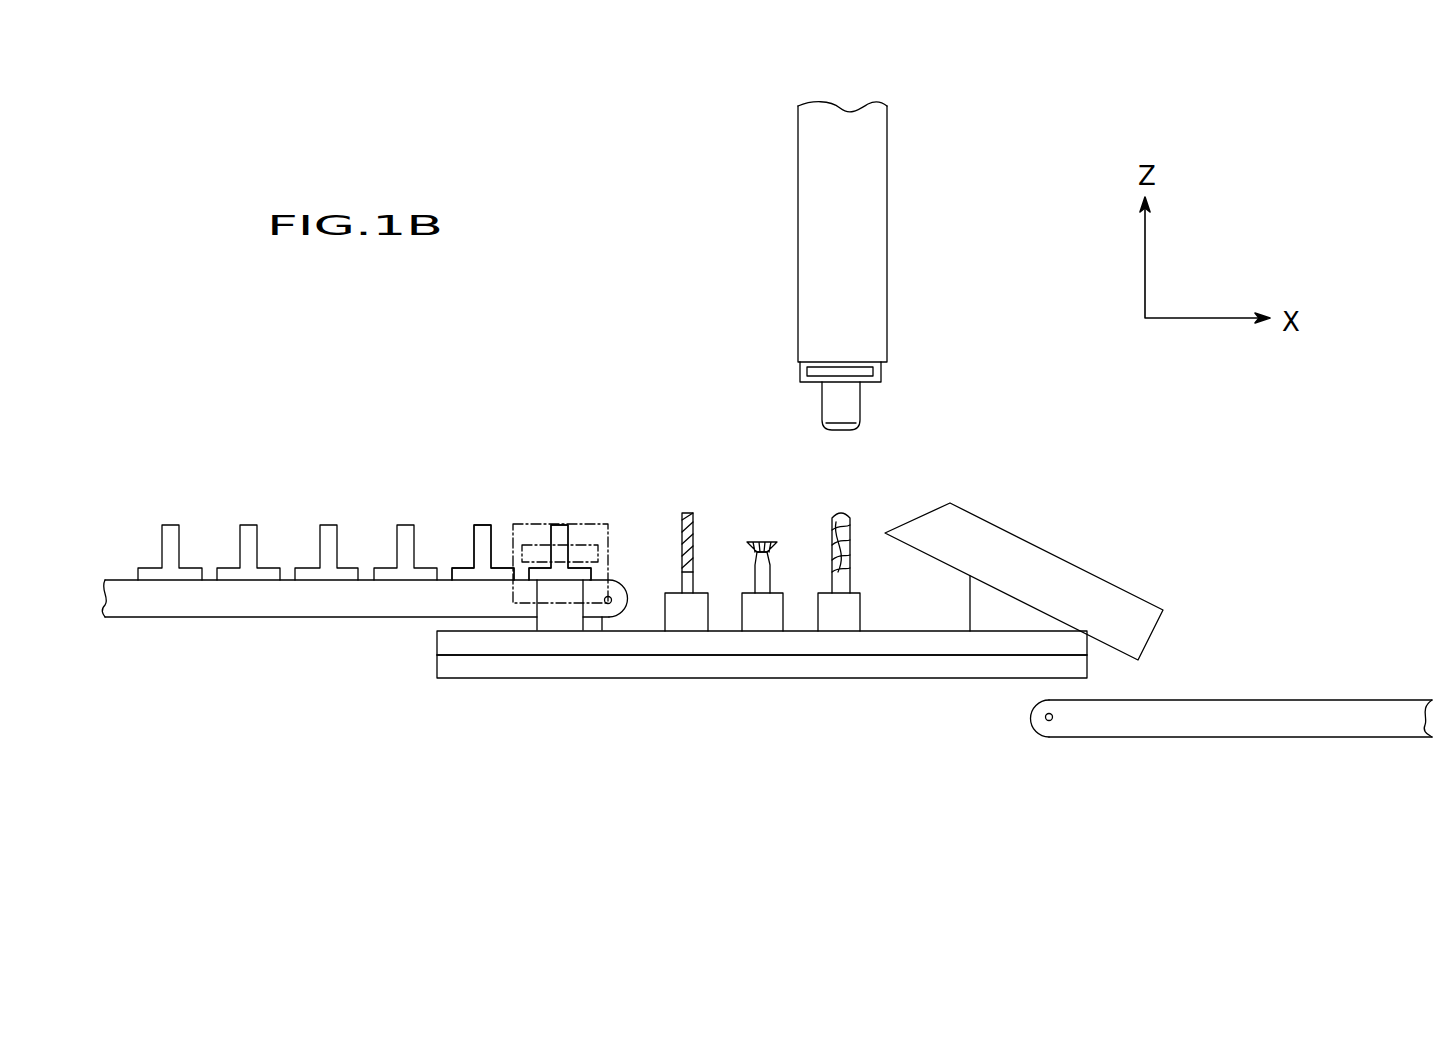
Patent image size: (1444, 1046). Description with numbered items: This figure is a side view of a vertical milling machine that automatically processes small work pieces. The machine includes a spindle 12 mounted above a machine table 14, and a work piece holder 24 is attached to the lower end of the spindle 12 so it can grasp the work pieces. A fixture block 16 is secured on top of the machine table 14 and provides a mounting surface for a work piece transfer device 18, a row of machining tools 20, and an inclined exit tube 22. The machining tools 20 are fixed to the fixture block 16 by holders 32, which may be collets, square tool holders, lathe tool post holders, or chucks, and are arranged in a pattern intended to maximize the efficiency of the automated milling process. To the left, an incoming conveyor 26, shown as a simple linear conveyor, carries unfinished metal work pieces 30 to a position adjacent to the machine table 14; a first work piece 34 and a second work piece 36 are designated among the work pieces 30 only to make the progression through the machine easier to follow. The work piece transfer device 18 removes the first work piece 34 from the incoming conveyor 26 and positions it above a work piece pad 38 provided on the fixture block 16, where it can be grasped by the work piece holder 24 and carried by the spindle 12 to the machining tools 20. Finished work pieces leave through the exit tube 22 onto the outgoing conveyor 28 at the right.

The spindle 12 is at (870, 227).
The machine table 14 is at (582, 667).
The fixture block 16 is at (643, 648).
The work piece transfer device 18 is at (528, 524).
The machining tools 20 is at (692, 527).
The exit tube 22 is at (1052, 568).
The work piece holder 24 is at (848, 405).
The incoming conveyor 26 is at (245, 595).
The outgoing conveyor 28 is at (1263, 723).
The work pieces 30 is at (168, 552).
The holders 32 is at (690, 613).
The first work piece 34 is at (560, 530).
The second work piece 36 is at (482, 528).
The work piece pad 38 is at (558, 617).